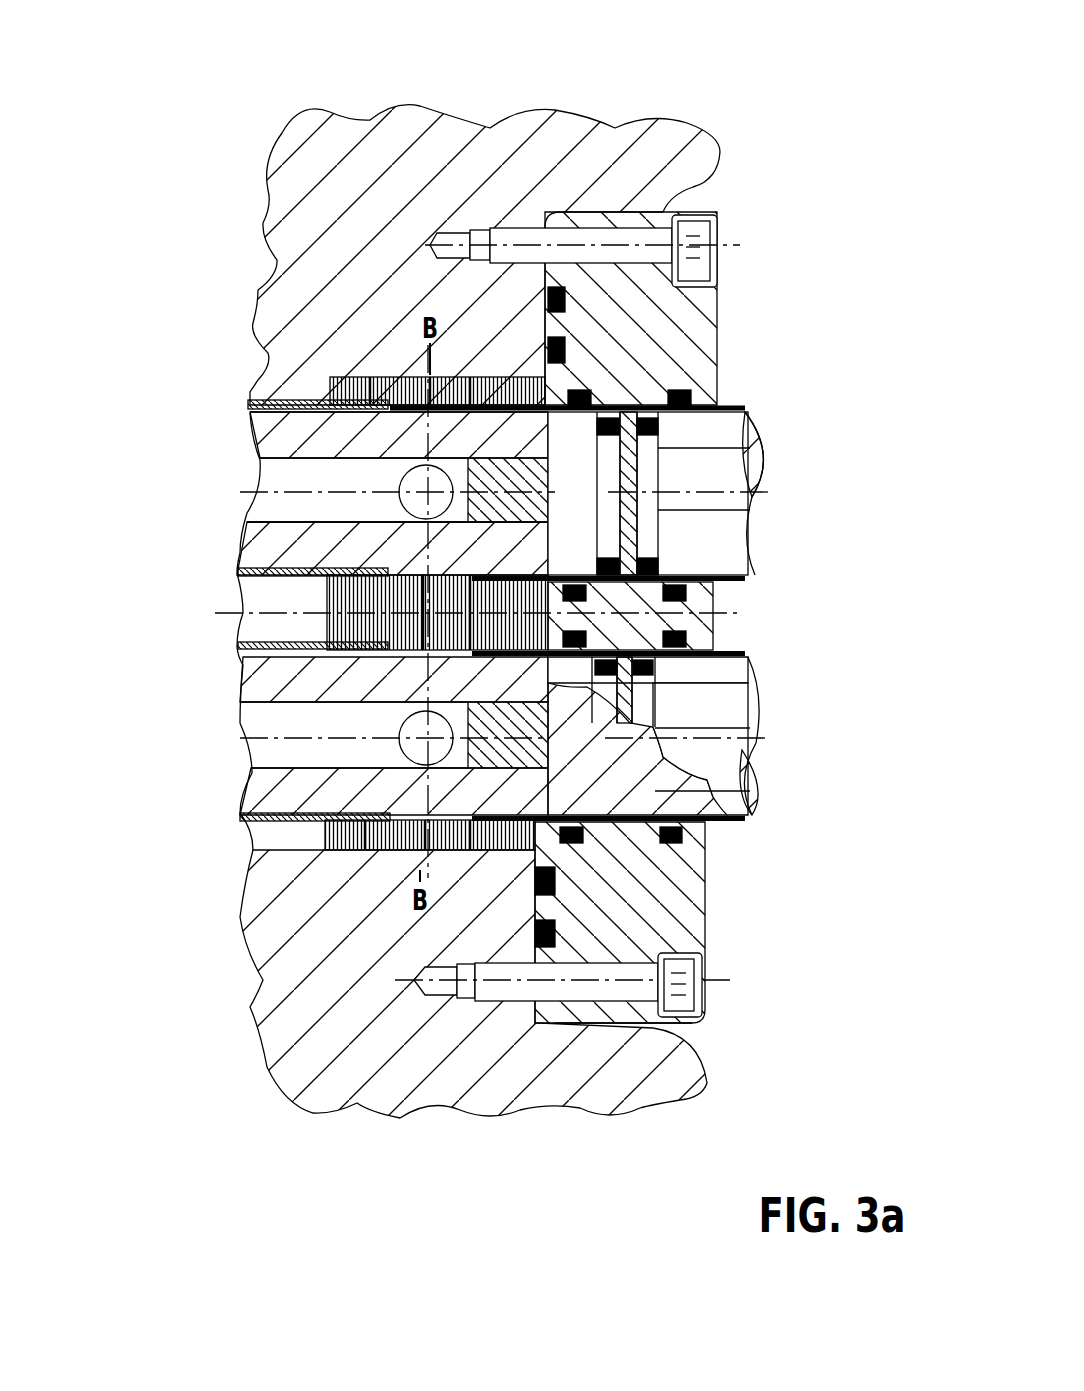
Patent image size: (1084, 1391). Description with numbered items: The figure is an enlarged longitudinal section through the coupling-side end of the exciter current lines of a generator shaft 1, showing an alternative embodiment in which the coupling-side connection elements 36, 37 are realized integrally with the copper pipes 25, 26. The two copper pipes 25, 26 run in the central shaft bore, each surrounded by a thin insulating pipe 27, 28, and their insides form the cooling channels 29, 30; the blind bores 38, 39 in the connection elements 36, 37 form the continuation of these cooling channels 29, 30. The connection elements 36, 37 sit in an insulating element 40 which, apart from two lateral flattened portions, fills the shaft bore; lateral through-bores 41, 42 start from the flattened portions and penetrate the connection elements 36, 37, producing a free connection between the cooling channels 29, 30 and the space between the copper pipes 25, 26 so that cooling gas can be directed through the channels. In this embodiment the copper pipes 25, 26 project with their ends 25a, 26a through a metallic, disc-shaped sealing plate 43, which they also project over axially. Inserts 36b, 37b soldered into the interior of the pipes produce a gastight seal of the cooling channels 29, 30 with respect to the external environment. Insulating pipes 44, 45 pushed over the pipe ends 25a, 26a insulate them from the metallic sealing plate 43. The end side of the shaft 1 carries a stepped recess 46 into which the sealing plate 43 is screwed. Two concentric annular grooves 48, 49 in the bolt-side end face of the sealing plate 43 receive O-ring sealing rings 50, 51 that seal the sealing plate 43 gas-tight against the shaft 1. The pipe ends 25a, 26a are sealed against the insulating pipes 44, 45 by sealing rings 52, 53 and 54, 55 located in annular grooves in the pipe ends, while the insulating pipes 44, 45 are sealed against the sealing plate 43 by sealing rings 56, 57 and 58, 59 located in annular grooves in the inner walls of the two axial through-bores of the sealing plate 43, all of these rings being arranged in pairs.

The shaft 1 is at (325, 200).
The copper pipe 25 is at (257, 668).
The copper pipe 26 is at (267, 430).
The insulating pipe 27 is at (313, 797).
The insulating pipe 28 is at (320, 425).
The cooling channel 29 is at (257, 752).
The cooling channel 30 is at (262, 470).
The coupling-side connection element 36 is at (415, 747).
The coupling-side connection element 37 is at (418, 482).
The insert 36b is at (597, 749).
The insert 37b is at (535, 490).
The blind bore 38 is at (293, 722).
The blind bore 39 is at (298, 508).
The insulating element 40 is at (466, 392).
The lateral through-bore 41 is at (361, 800).
The lateral through-bore 42 is at (373, 404).
The sealing plate 43 is at (645, 313).
The insulating pipe 44 is at (692, 761).
The insulating pipe 45 is at (656, 479).
The stepped recess 46 is at (655, 1029).
The annular groove 48 is at (560, 1012).
The annular groove 49 is at (620, 1025).
The sealing ring 50 is at (557, 290).
The sealing ring 51 is at (600, 232).
The sealing ring 52 is at (750, 791).
The sealing ring 53 is at (750, 728).
The sealing ring 54 is at (750, 448).
The sealing ring 55 is at (750, 510).
The sealing ring 56 is at (602, 861).
The sealing ring 57 is at (600, 886).
The sealing ring 58 is at (793, 483).
The sealing ring 59 is at (743, 455).
The pipe end 25a is at (722, 692).
The pipe end 26a is at (725, 540).